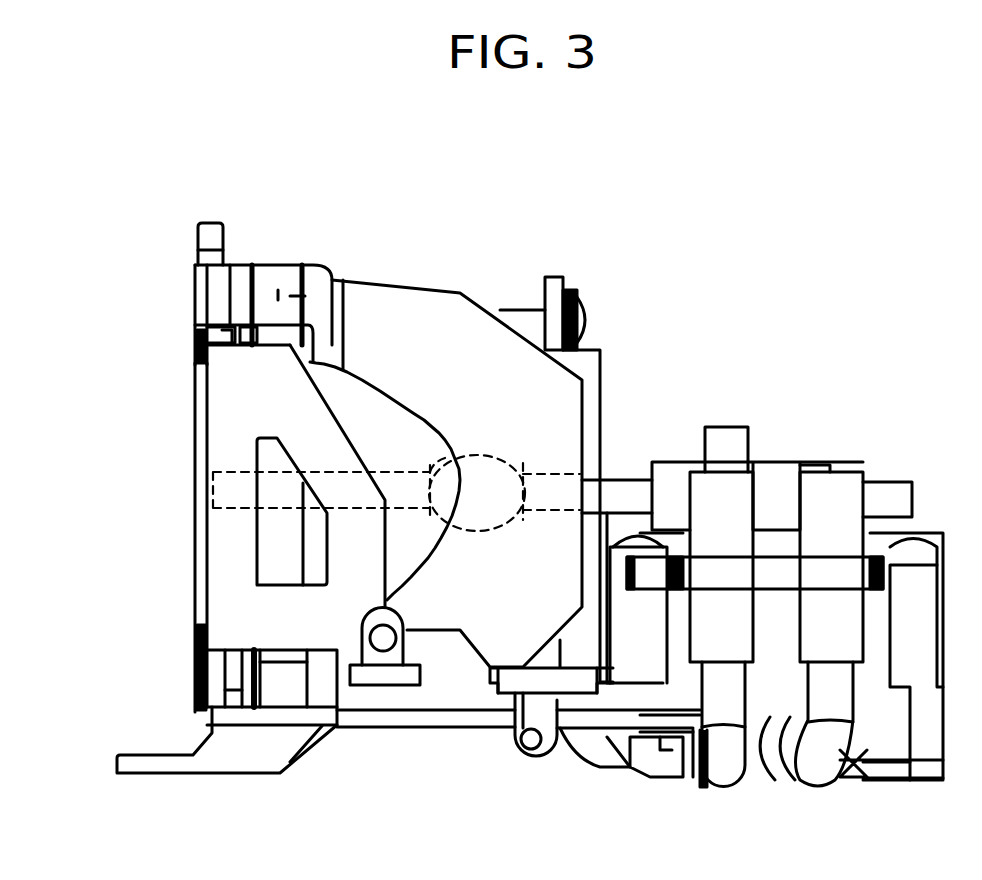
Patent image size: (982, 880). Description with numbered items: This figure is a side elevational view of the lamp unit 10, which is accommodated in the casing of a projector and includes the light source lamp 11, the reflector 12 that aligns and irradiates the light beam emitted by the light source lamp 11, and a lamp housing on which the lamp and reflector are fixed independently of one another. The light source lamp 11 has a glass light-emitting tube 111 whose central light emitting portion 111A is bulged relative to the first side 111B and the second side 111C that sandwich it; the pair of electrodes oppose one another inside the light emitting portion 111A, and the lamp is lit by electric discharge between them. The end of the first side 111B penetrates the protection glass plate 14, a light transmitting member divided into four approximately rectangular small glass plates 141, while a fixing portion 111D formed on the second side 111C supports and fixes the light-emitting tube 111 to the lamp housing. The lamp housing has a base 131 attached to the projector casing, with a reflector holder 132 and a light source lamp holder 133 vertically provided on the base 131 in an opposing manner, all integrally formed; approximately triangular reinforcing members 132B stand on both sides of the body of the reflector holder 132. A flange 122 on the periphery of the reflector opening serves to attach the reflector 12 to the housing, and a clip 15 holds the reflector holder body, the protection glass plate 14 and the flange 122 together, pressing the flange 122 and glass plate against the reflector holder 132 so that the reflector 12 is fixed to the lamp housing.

The lamp unit 10 is at (676, 318).
The light source lamp 11 is at (541, 464).
The reflector 12 is at (435, 283).
The protection glass plate 14 is at (233, 675).
The clip 15 is at (278, 290).
The light-emitting tube 111 is at (541, 512).
The light emitting portion 111A is at (492, 455).
The first side 111B is at (393, 470).
The second side 111C is at (630, 467).
The fixing portion 111D is at (783, 462).
The flange 122 is at (290, 688).
The base 131 is at (218, 715).
The reflector holder 132 is at (197, 335).
The reinforcing member 132B is at (222, 582).
The light source lamp holder 133 is at (725, 440).
The small glass plate 141 is at (227, 347).